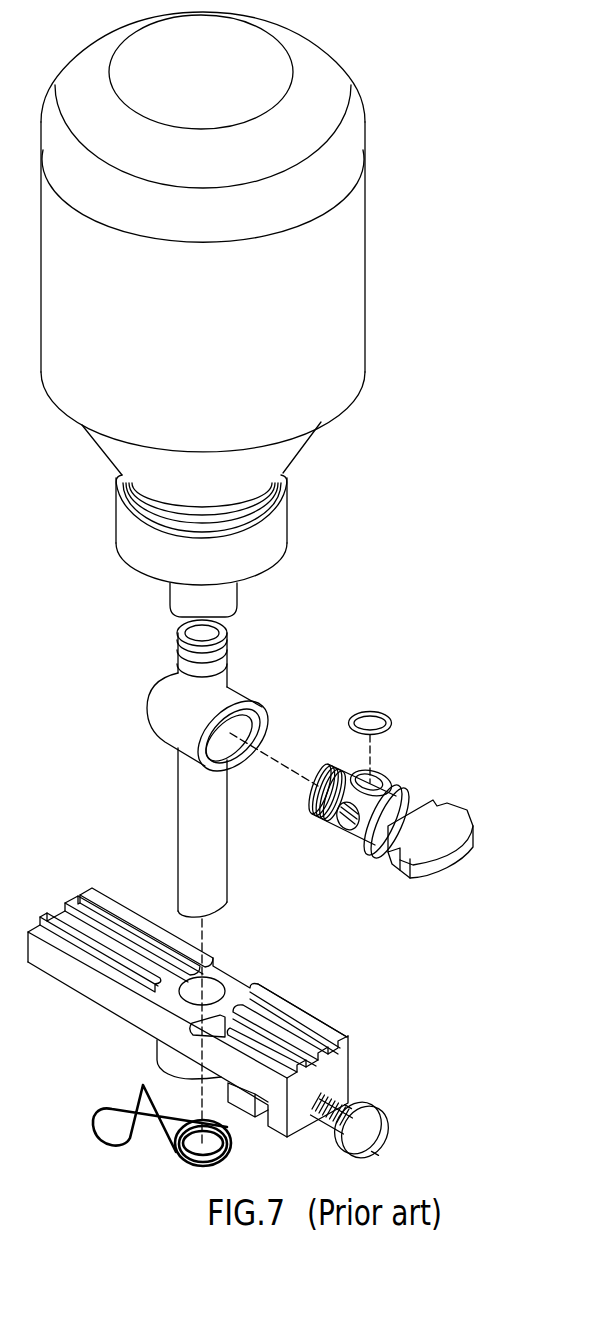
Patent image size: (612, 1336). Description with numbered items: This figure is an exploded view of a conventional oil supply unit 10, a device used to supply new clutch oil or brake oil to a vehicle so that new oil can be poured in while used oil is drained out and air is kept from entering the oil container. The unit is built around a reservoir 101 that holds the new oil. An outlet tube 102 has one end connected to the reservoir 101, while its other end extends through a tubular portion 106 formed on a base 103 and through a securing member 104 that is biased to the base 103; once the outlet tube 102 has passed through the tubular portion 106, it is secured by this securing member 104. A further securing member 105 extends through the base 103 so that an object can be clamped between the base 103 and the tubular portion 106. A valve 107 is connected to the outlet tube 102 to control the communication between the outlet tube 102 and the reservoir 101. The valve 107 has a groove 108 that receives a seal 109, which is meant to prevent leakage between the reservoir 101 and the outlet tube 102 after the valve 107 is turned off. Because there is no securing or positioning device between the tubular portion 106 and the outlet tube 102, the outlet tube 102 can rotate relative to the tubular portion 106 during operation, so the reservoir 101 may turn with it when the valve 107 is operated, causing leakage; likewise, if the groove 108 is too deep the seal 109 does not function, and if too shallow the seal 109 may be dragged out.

The oil supply unit 10 is at (457, 438).
The reservoir 101 is at (357, 290).
The outlet tube 102 is at (227, 835).
The base 103 is at (316, 1014).
The securing member 104 is at (177, 1156).
The securing member 105 is at (386, 1136).
The tubular portion 106 is at (162, 1052).
The valve 107 is at (420, 789).
The groove 108 is at (372, 781).
The seal 109 is at (380, 712).